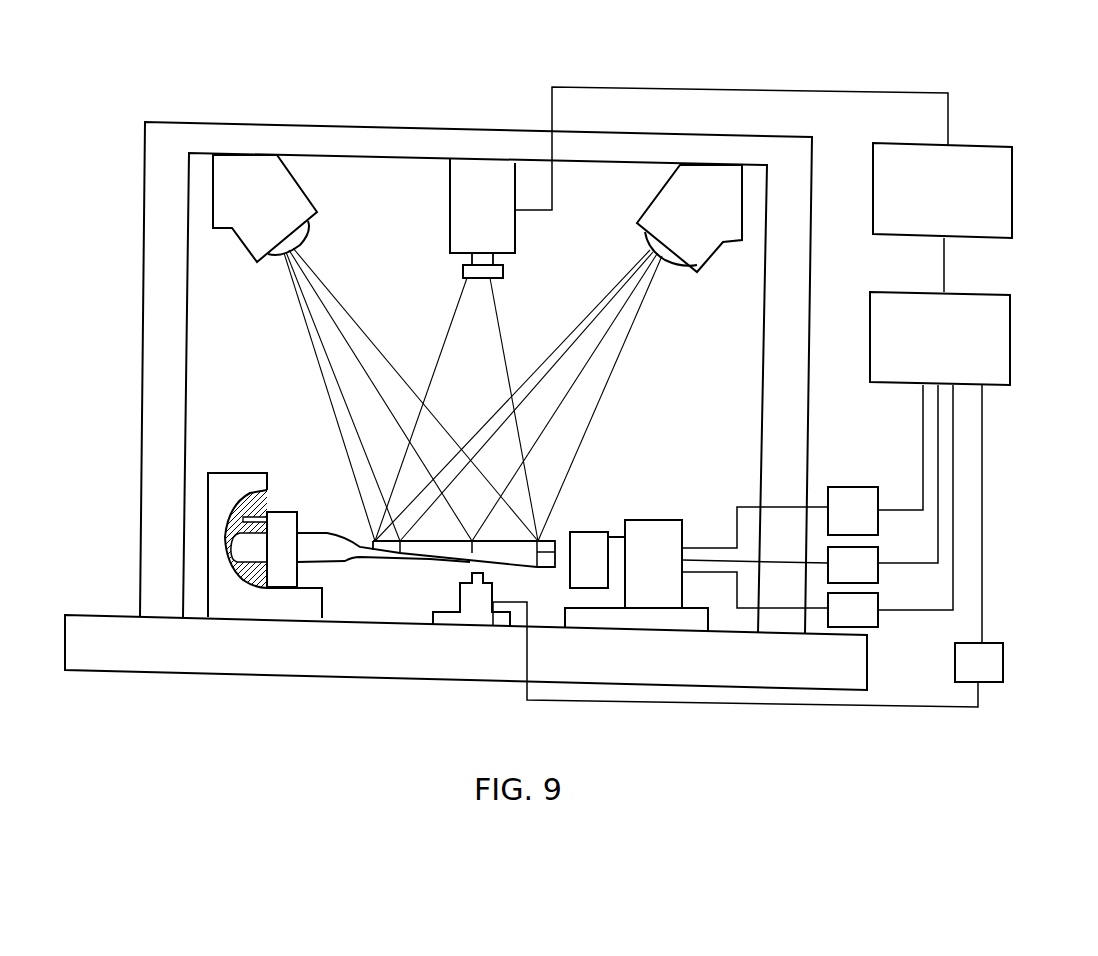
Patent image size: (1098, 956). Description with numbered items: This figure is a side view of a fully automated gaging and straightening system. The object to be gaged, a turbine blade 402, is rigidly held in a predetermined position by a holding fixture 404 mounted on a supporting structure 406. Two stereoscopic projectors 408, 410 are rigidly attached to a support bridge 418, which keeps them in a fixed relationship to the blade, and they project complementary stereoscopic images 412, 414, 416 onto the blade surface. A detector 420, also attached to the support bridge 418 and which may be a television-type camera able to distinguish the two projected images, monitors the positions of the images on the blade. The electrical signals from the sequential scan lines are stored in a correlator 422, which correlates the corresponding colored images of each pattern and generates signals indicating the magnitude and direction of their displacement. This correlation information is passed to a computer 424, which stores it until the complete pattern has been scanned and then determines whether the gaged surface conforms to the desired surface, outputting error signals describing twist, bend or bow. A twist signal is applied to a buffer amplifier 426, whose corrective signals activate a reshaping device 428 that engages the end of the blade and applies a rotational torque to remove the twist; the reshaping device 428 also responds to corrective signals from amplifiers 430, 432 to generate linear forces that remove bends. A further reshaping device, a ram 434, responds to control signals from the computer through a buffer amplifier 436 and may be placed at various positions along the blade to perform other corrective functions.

The turbine blade 402 is at (352, 561).
The holding fixture 404 is at (252, 473).
The supporting structure 406 is at (114, 615).
The stereoscopic projector 408 is at (296, 212).
The stereoscopic projector 410 is at (660, 206).
The stereoscopic image 412 is at (427, 559).
The stereoscopic image 414 is at (472, 552).
The stereoscopic image 416 is at (555, 541).
The support bridge 418 is at (405, 123).
The detector 420 is at (500, 242).
The correlator 422 is at (1000, 172).
The computer 424 is at (997, 333).
The buffer amplifier 426 is at (863, 561).
The reshaping device 428 is at (665, 531).
The amplifier 430 is at (860, 498).
The amplifier 432 is at (858, 613).
The ram 434 is at (492, 586).
The buffer amplifier 436 is at (990, 666).